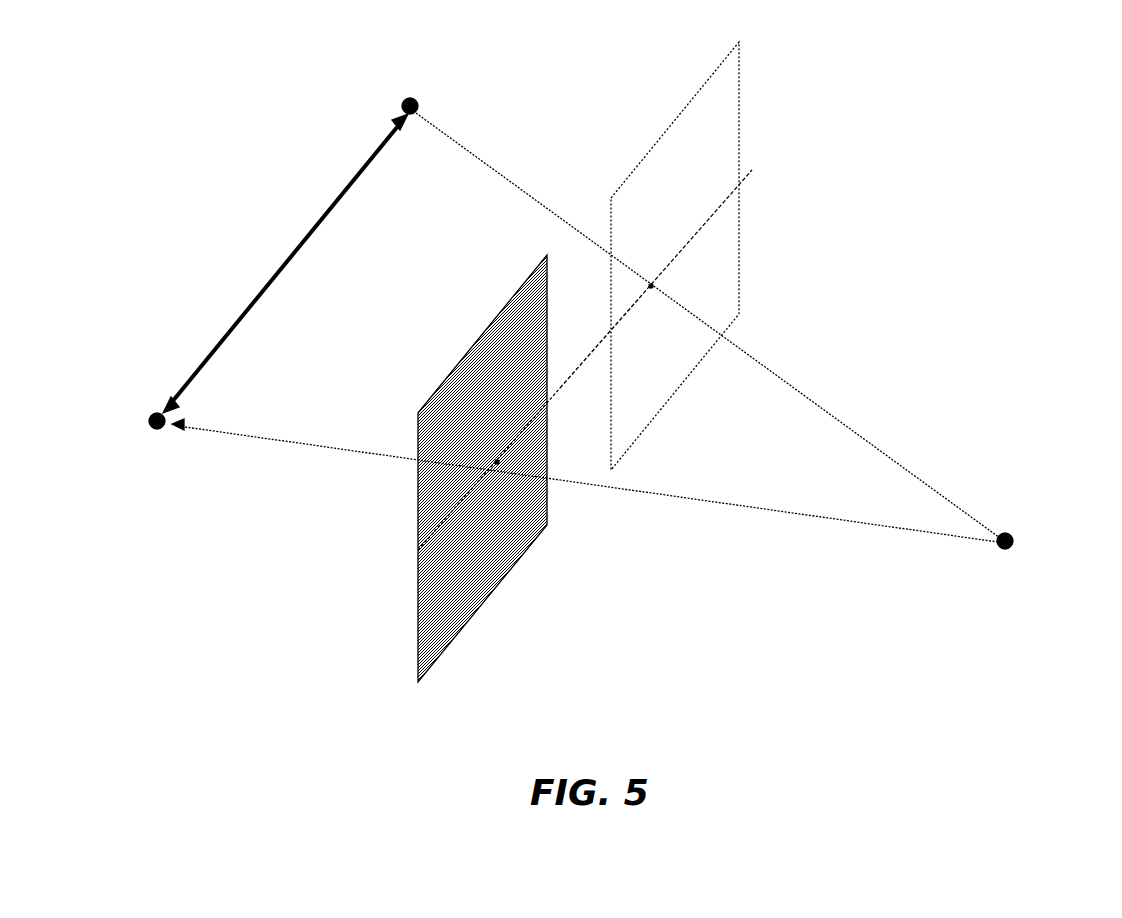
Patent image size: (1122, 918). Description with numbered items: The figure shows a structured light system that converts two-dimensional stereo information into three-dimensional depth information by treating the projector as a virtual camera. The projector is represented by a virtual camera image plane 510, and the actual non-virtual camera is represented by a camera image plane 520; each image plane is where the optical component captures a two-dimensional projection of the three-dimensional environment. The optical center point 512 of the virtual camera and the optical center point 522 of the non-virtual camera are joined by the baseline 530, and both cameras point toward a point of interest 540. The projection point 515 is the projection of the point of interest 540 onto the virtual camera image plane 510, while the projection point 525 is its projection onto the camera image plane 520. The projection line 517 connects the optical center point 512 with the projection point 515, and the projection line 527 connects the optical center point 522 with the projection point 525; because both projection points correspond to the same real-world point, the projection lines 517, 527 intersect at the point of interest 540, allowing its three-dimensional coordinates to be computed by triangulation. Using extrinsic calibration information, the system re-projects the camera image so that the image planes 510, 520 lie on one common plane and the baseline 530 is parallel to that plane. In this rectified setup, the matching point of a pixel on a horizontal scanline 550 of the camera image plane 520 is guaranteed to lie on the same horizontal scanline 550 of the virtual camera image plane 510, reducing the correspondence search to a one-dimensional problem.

The virtual camera image plane 510 is at (741, 120).
The optical center point of the virtual camera 512 is at (419, 104).
The projection point 515 is at (656, 290).
The projection line 517 is at (764, 370).
The camera image plane 520 is at (515, 556).
The optical center point of the non-virtual camera 522 is at (166, 416).
The projection point 525 is at (503, 466).
The projection line 527 is at (693, 499).
The baseline 530 is at (294, 257).
The point of interest 540 is at (1014, 540).
The horizontal scanline 550 is at (570, 384).